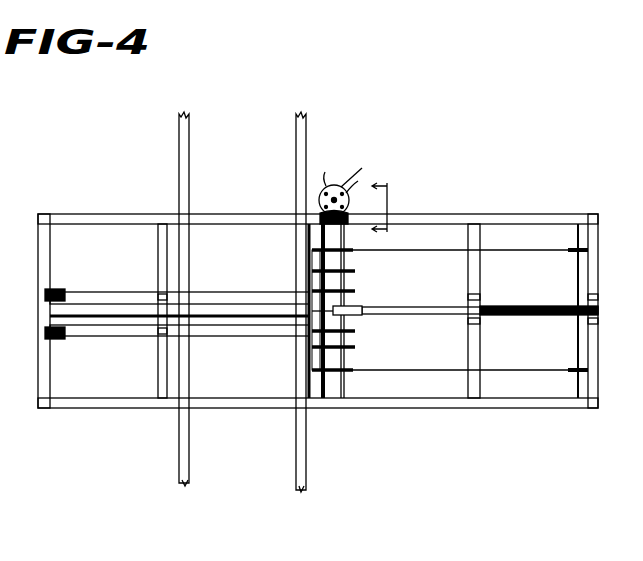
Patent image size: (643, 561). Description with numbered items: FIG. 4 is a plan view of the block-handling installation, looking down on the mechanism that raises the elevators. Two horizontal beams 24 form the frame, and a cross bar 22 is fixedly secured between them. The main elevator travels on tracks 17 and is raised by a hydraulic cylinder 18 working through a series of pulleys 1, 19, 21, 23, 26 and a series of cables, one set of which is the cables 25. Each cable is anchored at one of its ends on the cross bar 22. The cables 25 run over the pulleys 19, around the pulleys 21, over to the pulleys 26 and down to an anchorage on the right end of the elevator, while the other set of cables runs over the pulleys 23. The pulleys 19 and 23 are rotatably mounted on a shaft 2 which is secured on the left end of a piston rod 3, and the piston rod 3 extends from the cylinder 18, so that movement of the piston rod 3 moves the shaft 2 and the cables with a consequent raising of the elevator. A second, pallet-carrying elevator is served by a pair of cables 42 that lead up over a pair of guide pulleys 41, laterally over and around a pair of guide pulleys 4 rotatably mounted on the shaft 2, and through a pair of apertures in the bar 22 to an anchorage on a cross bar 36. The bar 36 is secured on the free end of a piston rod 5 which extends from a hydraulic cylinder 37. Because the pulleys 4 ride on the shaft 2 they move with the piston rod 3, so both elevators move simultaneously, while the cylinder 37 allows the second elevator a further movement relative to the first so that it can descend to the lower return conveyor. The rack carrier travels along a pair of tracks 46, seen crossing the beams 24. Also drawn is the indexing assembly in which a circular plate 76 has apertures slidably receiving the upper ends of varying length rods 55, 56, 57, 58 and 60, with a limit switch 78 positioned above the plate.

The pulley 1 is at (313, 270).
The shaft 2 is at (346, 304).
The piston rod 3 is at (398, 308).
The guide pulleys 4 is at (356, 291).
The piston rod 5 is at (389, 211).
The tracks 17 is at (318, 213).
The hydraulic cylinder 18 is at (523, 307).
The pulleys 19 is at (352, 251).
The pulleys 21 is at (314, 254).
The cross bar 22 is at (313, 245).
The pulleys 23 is at (356, 272).
The horizontal beams 24 is at (150, 213).
The cables 25 is at (432, 251).
The pulleys 26 is at (574, 253).
The cross bar 36 is at (300, 322).
The hydraulic cylinder 37 is at (106, 315).
The guide pulleys 41 is at (70, 288).
The cables 42 is at (116, 292).
The tracks 46 is at (189, 125).
The rod 55 is at (350, 201).
The rod 56 is at (361, 180).
The rod 57 is at (327, 169).
The rod 58 is at (321, 192).
The rod 60 is at (350, 210).
The circular plate 76 is at (358, 170).
The limit switch 78 is at (350, 216).